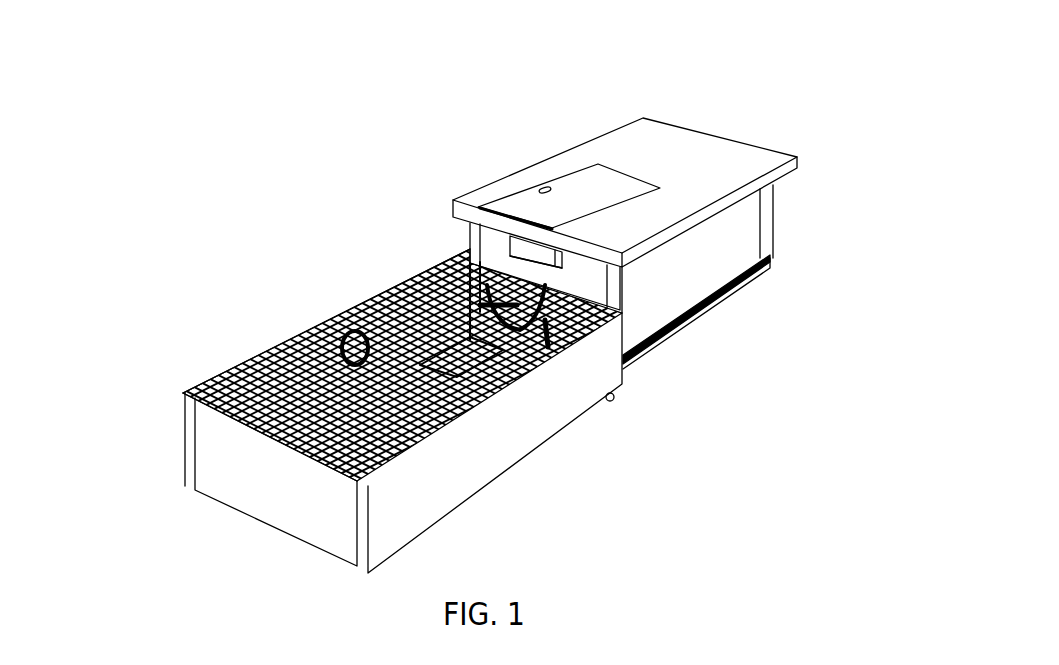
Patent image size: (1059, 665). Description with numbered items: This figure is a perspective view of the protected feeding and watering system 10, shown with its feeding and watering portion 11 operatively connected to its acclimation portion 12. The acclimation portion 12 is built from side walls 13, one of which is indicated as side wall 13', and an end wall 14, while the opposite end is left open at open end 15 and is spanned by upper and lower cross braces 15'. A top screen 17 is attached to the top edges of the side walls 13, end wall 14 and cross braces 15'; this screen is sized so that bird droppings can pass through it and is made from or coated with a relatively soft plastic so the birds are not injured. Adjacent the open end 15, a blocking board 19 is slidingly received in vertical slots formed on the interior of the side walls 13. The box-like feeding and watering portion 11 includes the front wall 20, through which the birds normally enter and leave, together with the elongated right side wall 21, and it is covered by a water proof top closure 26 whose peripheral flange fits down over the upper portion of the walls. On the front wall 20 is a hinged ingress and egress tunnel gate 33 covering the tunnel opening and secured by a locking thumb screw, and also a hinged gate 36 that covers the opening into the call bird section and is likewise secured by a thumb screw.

The protected feeding and watering system 10 is at (410, 203).
The feeding and watering portion 11 is at (665, 80).
The acclimation portion 12 is at (144, 382).
The side walls 13 is at (403, 443).
The tray side wall 13' is at (326, 321).
The end wall 14 is at (300, 512).
The open end 15 is at (456, 293).
The cross braces 15' is at (498, 169).
The top screen 17 is at (267, 352).
The blocking board 19 is at (592, 182).
The front wall 20 is at (590, 277).
The elongated right side wall 21 is at (693, 283).
The water proof top closure 26 is at (733, 160).
The hinged ingress and egress tunnel gate 33 is at (382, 300).
The hinged gate 36 is at (552, 363).